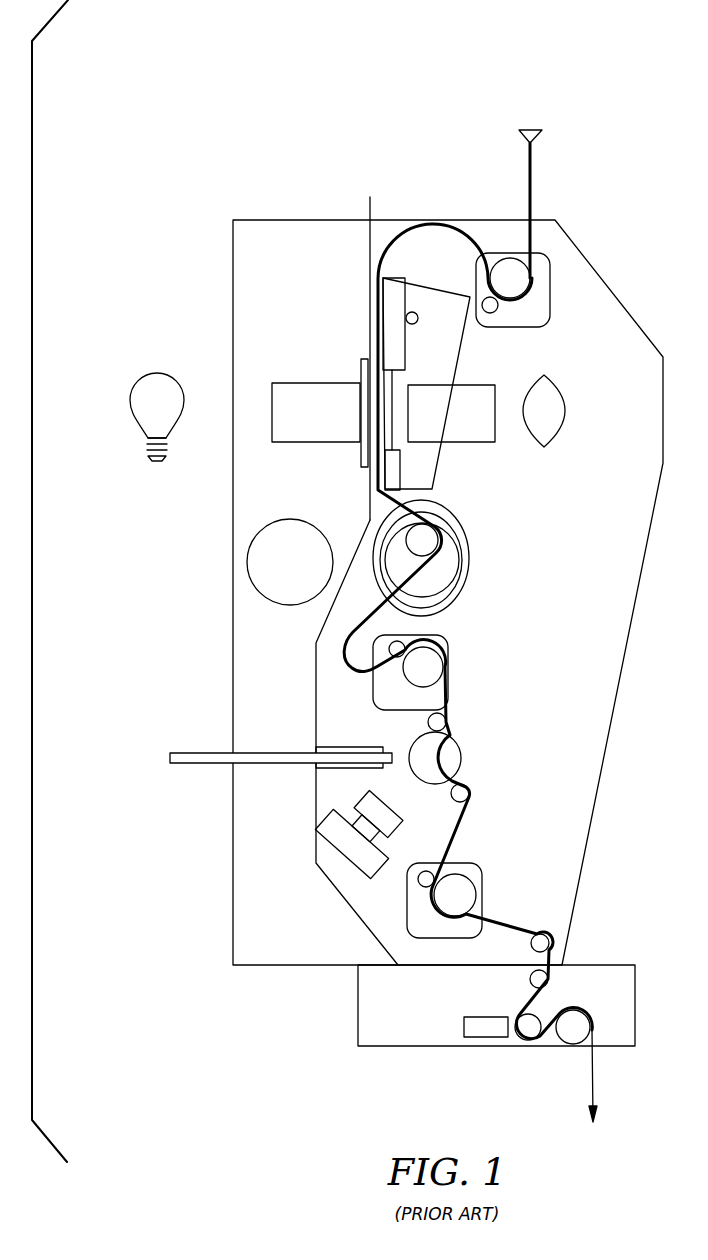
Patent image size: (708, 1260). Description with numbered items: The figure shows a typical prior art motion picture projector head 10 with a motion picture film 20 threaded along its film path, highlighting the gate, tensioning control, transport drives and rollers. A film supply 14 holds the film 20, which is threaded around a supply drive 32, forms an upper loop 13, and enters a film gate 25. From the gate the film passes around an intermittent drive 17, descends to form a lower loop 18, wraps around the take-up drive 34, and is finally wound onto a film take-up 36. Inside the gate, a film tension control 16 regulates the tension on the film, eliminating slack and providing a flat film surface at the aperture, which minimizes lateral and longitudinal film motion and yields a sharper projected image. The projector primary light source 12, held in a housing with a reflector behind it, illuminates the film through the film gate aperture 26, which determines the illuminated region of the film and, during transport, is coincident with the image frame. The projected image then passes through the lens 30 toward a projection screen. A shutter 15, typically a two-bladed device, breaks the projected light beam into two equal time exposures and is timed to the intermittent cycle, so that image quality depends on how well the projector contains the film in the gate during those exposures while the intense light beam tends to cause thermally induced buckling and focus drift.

The motion picture projector head 10 is at (617, 71).
The projector primary light source 12 is at (133, 415).
The upper loop 13 is at (433, 224).
The film supply 14 is at (524, 128).
The shutter 15 is at (360, 451).
The film tension control 16 is at (405, 318).
The intermittent drive 17 is at (470, 570).
The lower loop 18 is at (353, 668).
The motion picture film 20 is at (532, 182).
The film gate 25 is at (367, 338).
The film gate aperture 26 is at (400, 380).
The lens 30 is at (565, 412).
The supply drive 32 is at (551, 290).
The take-up drive 34 is at (484, 900).
The film take-up 36 is at (592, 1092).